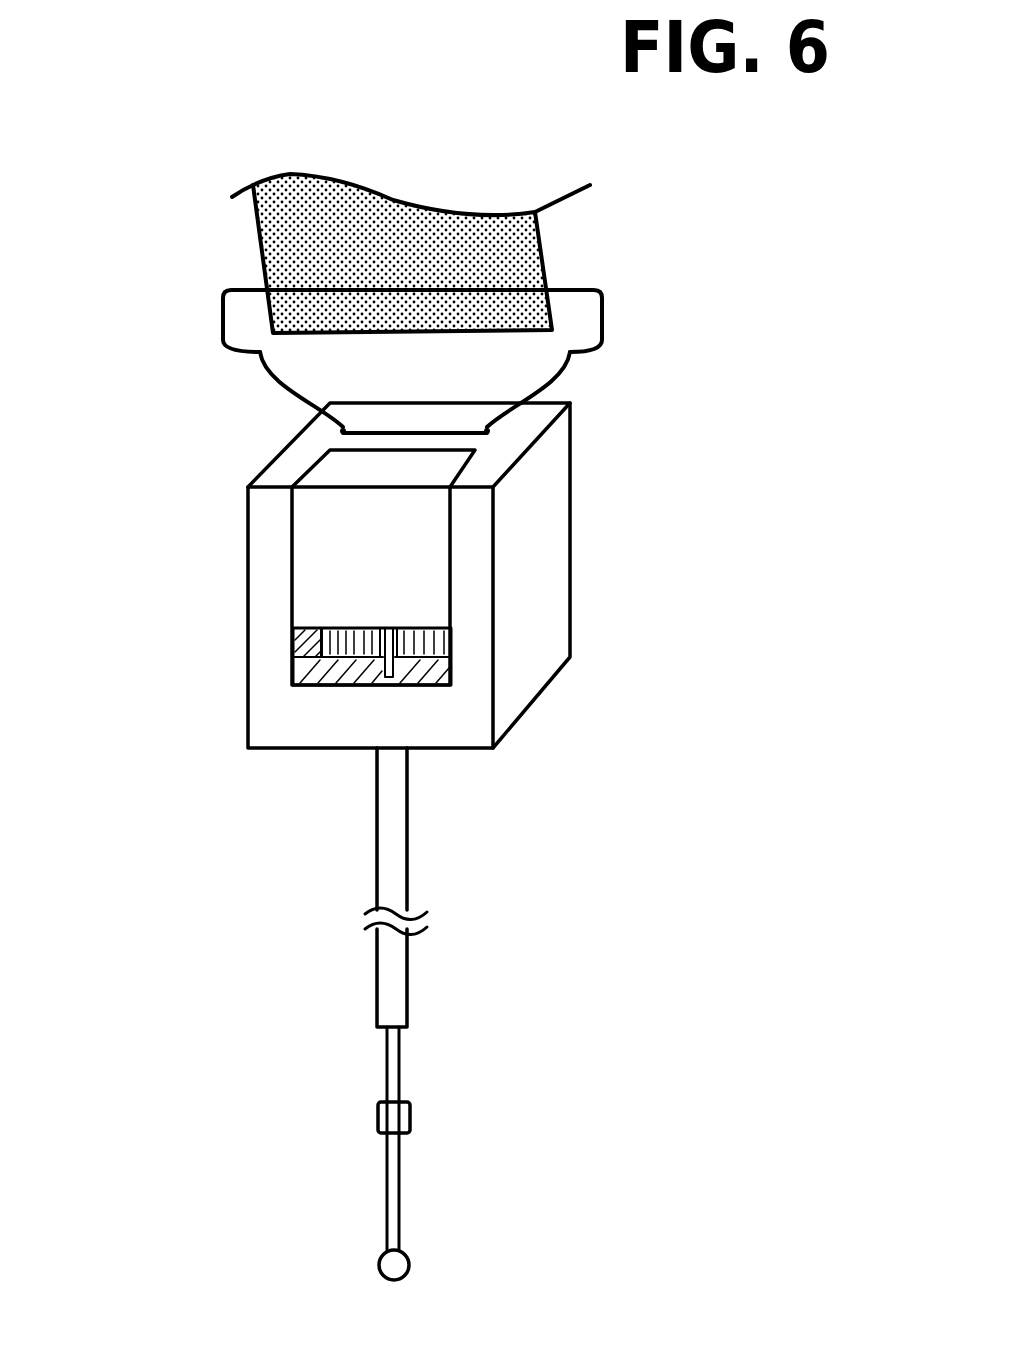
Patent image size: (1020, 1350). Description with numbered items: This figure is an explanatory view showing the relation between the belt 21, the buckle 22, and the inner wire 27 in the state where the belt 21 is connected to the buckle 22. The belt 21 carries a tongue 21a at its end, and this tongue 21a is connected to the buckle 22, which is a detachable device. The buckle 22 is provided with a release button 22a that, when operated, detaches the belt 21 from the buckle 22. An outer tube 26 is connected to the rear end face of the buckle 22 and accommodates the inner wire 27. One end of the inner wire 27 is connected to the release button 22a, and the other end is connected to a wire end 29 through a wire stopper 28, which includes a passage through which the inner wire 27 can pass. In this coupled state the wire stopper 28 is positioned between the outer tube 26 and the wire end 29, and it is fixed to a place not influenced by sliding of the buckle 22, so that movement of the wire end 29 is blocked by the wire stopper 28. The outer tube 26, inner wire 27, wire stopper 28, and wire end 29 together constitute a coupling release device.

The belt 21 is at (547, 260).
The tongue 21a is at (565, 360).
The buckle 22 is at (572, 530).
The release button 22a is at (317, 552).
The outer tube 26 is at (407, 830).
The inner wire 27 is at (417, 636).
The wire stopper 28 is at (410, 1118).
The wire end 29 is at (409, 1267).